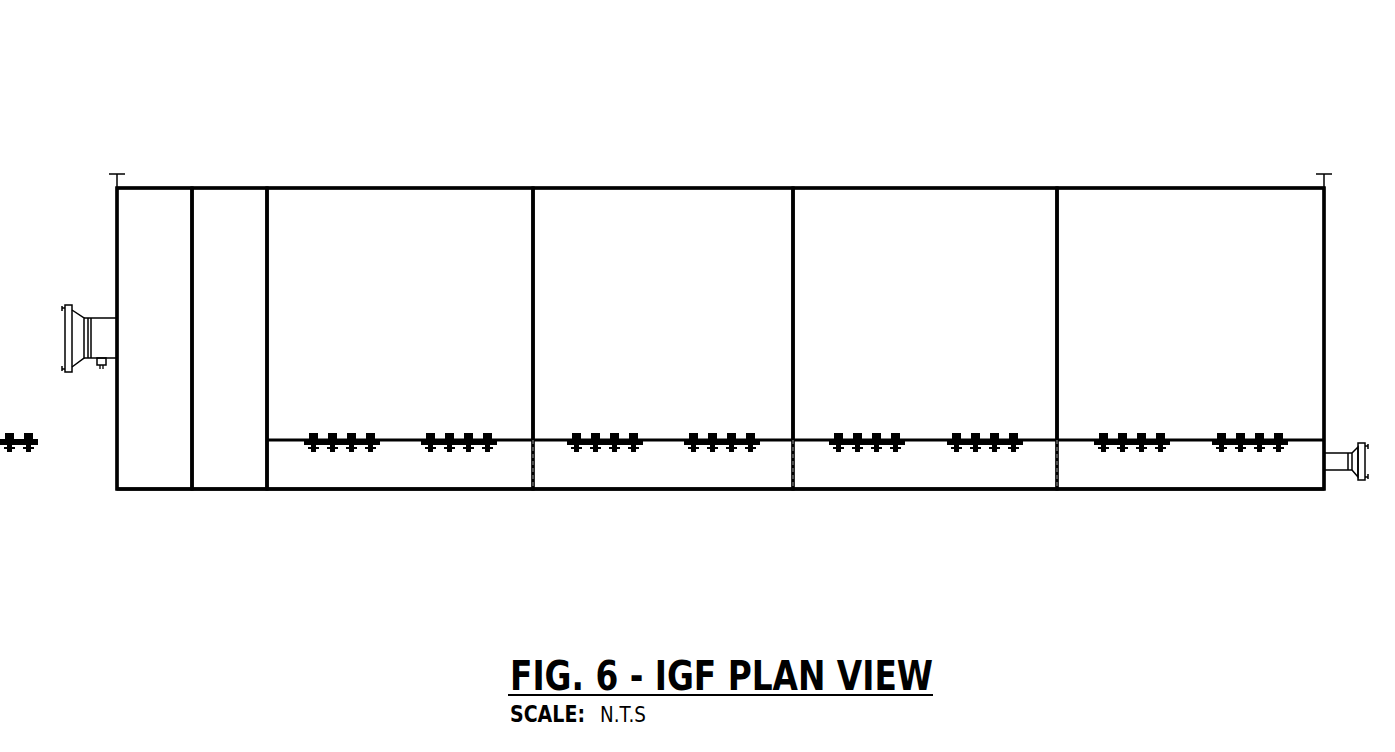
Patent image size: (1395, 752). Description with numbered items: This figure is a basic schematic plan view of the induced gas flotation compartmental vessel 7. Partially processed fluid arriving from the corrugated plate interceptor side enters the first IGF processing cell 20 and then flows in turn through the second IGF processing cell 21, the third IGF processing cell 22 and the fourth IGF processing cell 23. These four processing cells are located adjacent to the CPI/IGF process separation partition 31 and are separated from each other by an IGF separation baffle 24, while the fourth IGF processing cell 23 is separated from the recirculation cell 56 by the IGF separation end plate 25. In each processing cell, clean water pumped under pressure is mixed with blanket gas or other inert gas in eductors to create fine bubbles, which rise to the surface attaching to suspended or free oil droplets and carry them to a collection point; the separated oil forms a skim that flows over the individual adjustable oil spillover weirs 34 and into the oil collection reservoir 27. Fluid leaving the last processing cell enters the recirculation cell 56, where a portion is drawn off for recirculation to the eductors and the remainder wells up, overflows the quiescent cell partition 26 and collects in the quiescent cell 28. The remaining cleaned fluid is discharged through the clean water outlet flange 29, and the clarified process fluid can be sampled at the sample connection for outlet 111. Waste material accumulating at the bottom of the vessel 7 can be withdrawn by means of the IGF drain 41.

The induced gas flotation compartmental vessel 7 is at (720, 578).
The IGF processing cell #1 20 is at (1190, 286).
The IGF processing cell #2 21 is at (925, 286).
The IGF processing cell #3 22 is at (663, 286).
The IGF processing cell #4 23 is at (400, 286).
The IGF separation baffle 24 is at (861, 261).
The IGF separation end plate 25 is at (334, 286).
The quiescent cell partition 26 is at (252, 286).
The oil collection reservoir (IGF) 27 is at (795, 510).
The quiescent cell 28 is at (167, 384).
The clean water outlet flange 29 is at (77, 292).
The CPI/IGF process separation partition 31 is at (720, 258).
The adjustable oil spillover weirs 34 is at (644, 507).
The IGF drain 41 is at (1338, 512).
The recirculation cell 56 is at (259, 384).
The sample connection for outlet 111 is at (72, 414).